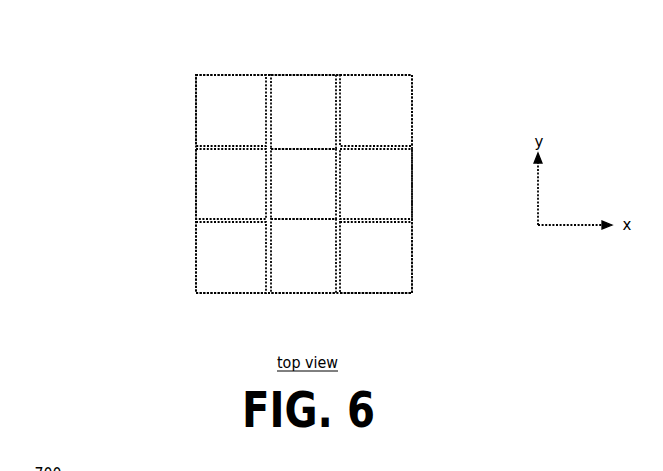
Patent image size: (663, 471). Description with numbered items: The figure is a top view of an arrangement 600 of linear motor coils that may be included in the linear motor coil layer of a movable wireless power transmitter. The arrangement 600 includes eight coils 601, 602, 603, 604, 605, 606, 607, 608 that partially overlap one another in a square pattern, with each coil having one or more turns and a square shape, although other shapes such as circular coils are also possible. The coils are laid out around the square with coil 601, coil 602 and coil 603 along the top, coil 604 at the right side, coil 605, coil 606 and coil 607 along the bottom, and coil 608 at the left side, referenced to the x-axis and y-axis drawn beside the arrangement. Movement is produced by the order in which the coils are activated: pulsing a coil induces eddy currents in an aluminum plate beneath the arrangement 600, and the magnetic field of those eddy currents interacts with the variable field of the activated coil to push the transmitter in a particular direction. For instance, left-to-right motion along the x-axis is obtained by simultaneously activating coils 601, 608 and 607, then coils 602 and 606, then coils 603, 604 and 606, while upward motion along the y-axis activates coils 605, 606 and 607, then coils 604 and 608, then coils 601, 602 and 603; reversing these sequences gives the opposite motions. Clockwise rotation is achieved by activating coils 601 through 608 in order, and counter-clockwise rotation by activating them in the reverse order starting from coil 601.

The arrangement of linear motor coils 600 is at (92, 46).
The coil 601 is at (224, 75).
The coil 602 is at (302, 75).
The coil 603 is at (387, 75).
The coil 604 is at (412, 183).
The coil 605 is at (383, 293).
The coil 606 is at (298, 293).
The coil 607 is at (219, 293).
The coil 608 is at (196, 183).